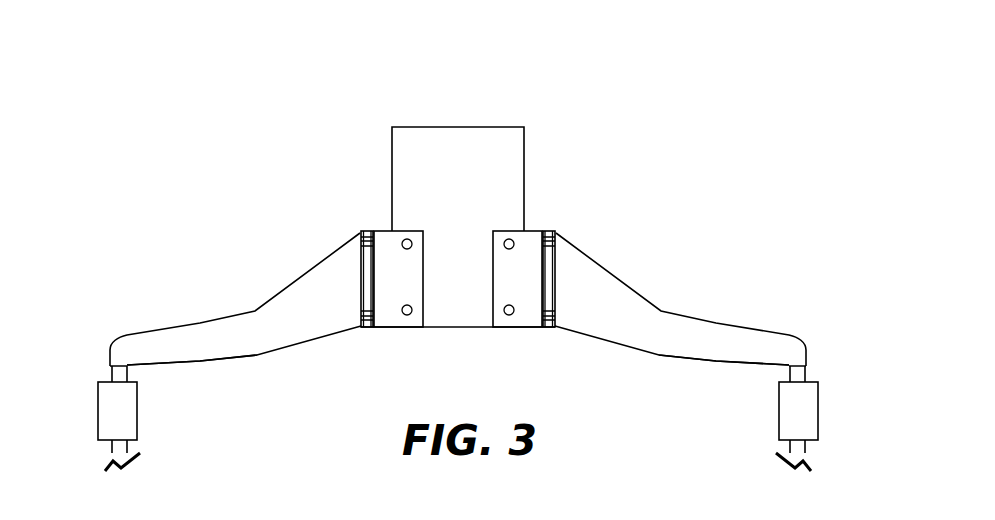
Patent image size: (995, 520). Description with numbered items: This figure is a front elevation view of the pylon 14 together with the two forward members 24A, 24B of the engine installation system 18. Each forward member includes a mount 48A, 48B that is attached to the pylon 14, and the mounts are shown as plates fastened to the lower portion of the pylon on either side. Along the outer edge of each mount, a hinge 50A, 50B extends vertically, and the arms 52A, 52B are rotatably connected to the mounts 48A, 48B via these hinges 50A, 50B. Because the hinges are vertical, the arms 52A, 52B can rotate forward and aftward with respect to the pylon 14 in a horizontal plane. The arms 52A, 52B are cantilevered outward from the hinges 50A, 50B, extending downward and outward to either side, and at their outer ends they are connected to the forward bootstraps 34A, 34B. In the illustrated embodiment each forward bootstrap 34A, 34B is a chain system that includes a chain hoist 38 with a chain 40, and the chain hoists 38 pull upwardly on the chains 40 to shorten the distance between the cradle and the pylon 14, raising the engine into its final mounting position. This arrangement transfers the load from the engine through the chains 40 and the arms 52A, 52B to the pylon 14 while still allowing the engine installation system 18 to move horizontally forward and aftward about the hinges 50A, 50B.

The pylon 14 is at (473, 127).
The engine installation system 18 is at (648, 103).
The forward member 24A is at (619, 264).
The forward member 24B is at (297, 264).
The forward bootstrap 34A is at (830, 391).
The forward bootstrap 34B is at (86, 391).
The chain hoist 38 is at (98, 410).
The chain 40 is at (112, 447).
The mount 48A is at (513, 328).
The mount 48B is at (403, 328).
The hinge 50A is at (553, 231).
The hinge 50B is at (363, 231).
The arm 52A is at (673, 357).
The arm 52B is at (243, 357).